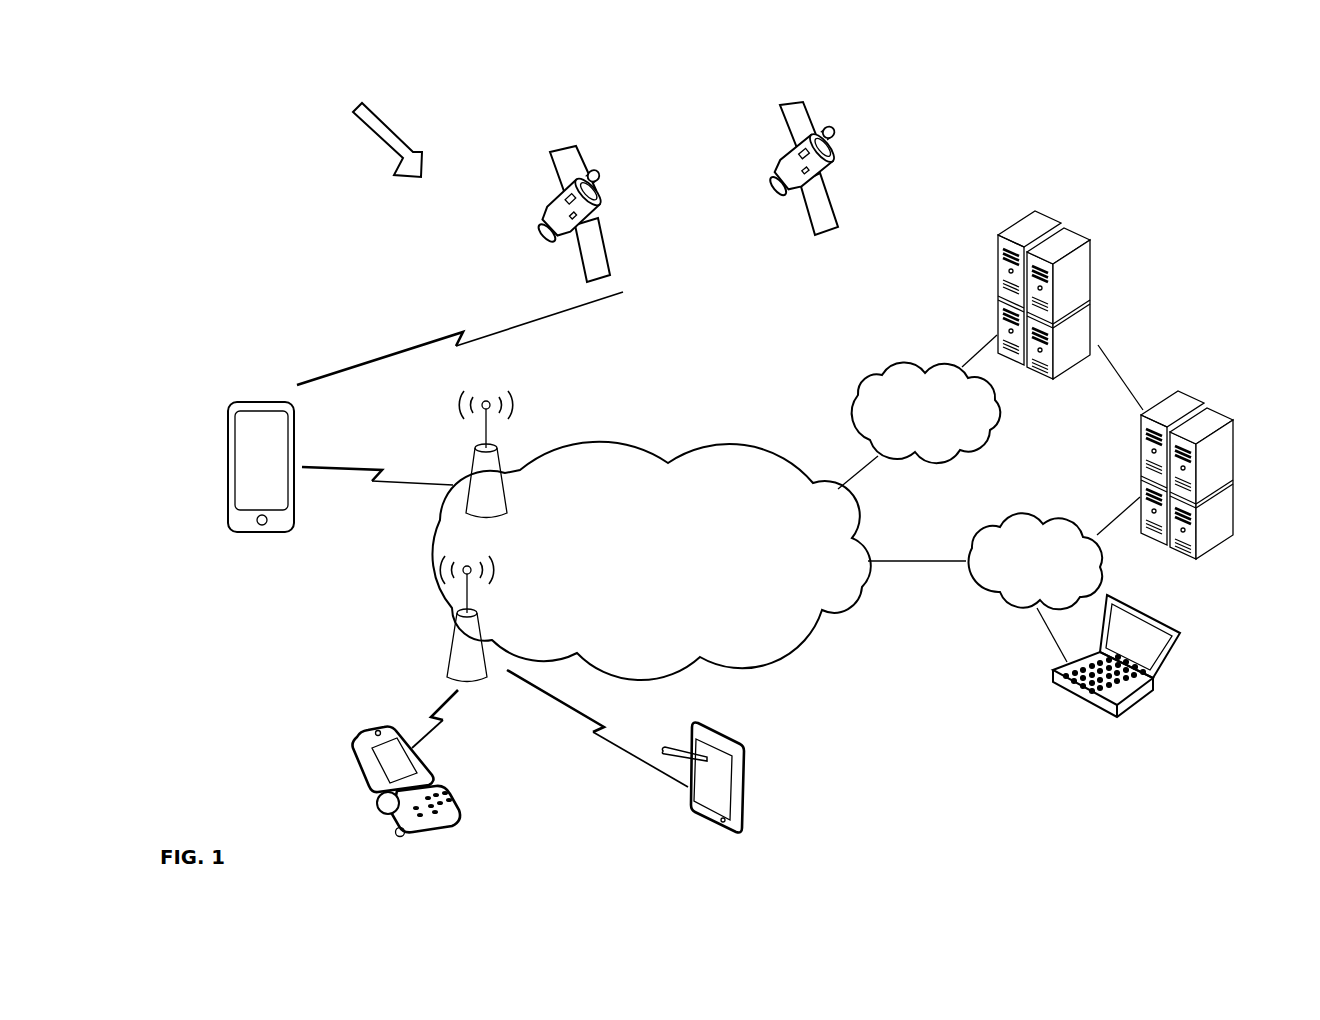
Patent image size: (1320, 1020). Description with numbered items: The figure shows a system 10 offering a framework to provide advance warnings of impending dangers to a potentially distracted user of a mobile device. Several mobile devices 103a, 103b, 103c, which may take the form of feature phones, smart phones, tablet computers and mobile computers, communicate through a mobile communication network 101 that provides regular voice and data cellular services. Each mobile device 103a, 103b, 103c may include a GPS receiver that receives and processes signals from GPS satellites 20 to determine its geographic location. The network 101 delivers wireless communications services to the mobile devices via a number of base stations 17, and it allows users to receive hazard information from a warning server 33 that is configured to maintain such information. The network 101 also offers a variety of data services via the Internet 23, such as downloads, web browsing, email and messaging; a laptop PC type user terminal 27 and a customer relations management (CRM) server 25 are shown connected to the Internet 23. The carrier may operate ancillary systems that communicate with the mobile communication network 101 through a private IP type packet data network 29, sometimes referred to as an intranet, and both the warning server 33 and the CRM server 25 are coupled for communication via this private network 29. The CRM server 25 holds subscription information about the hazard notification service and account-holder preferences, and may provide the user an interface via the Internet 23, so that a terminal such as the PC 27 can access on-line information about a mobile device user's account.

The system 10 is at (377, 132).
The GPS satellite 20 is at (777, 198).
The mobile communication network 101 is at (590, 444).
The base station 17 is at (467, 472).
The mobile device 103a is at (228, 460).
The mobile device 103b is at (370, 787).
The mobile device 103c is at (743, 808).
The private IP type packet data network 29 is at (1000, 427).
The warning server 33 is at (1094, 298).
The customer relations management (CRM) server 25 is at (1140, 475).
The Internet 23 is at (980, 600).
The laptop PC type user terminal 27 is at (1080, 703).